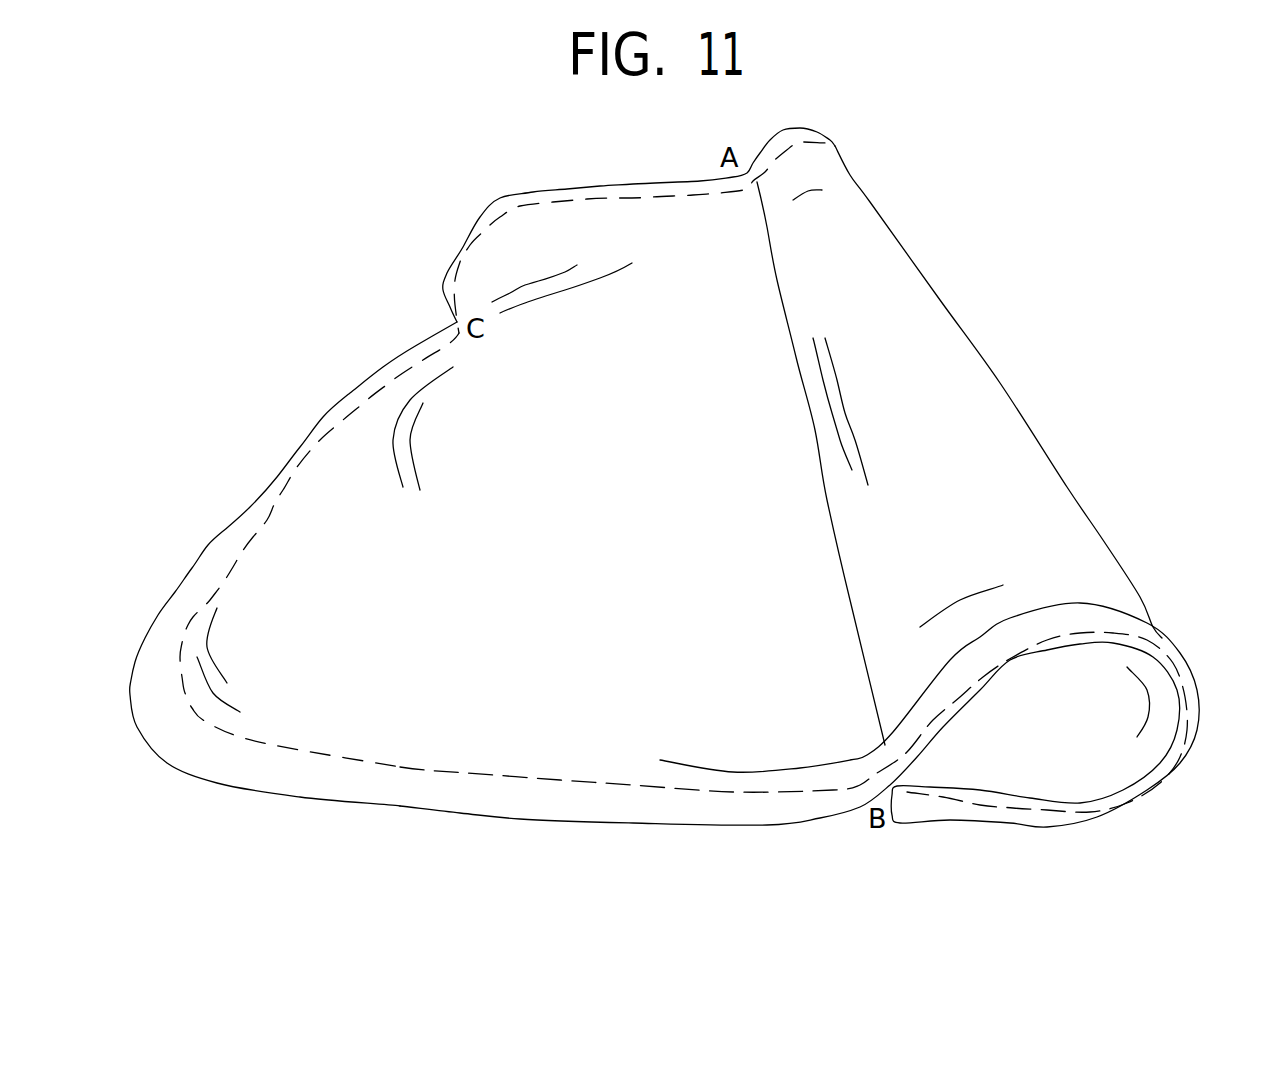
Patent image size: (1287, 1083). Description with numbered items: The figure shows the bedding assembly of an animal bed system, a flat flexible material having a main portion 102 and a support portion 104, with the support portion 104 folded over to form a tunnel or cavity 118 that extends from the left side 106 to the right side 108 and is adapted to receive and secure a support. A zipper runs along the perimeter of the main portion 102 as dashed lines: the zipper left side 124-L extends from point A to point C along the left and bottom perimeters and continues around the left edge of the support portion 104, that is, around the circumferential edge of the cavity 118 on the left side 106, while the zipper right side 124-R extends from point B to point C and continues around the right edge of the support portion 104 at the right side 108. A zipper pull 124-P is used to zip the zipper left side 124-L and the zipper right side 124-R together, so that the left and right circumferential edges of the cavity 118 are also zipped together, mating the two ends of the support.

The main portion 102 is at (470, 522).
The support portion 104 is at (893, 400).
The left side 106 is at (638, 160).
The right side 108 is at (646, 836).
The cavity 118 is at (779, 120).
The zipper left side 124-L is at (558, 203).
The zipper pull 124-P is at (453, 322).
The zipper right side 124-R is at (453, 770).